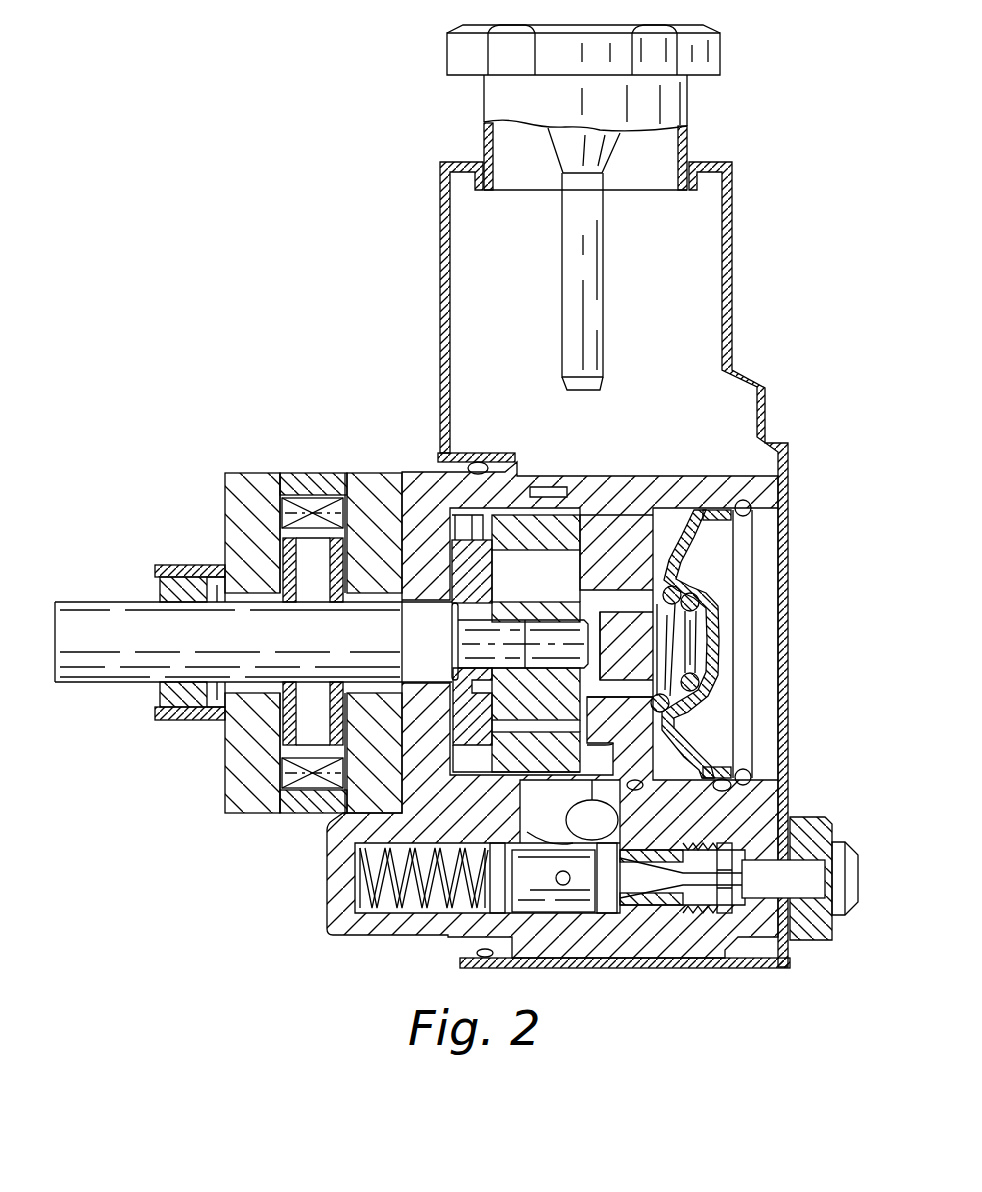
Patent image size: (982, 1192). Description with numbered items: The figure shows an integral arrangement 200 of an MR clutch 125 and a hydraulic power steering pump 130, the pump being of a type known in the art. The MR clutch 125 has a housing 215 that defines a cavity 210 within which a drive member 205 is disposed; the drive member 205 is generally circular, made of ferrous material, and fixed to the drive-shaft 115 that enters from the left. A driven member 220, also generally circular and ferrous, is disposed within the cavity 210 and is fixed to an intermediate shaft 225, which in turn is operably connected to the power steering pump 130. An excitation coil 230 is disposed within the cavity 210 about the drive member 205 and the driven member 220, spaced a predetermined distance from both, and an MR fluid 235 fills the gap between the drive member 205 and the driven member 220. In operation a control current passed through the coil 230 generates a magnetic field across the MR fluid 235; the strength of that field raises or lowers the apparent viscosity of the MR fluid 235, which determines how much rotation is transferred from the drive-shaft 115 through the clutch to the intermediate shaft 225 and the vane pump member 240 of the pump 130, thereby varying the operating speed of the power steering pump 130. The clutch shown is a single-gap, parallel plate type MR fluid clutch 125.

The integral arrangement 200 is at (773, 285).
The hydraulic power steering pump 130 is at (787, 572).
The MR clutch 125 is at (252, 474).
The cavity 210 is at (313, 525).
The MR fluid 235 is at (303, 567).
The drive member 205 is at (277, 728).
The housing 215 is at (222, 772).
The excitation coil 230 is at (293, 787).
The driven member 220 is at (325, 737).
The drive-shaft 115 is at (100, 602).
The intermediate shaft 225 is at (420, 612).
The vane pump member 240 is at (548, 520).